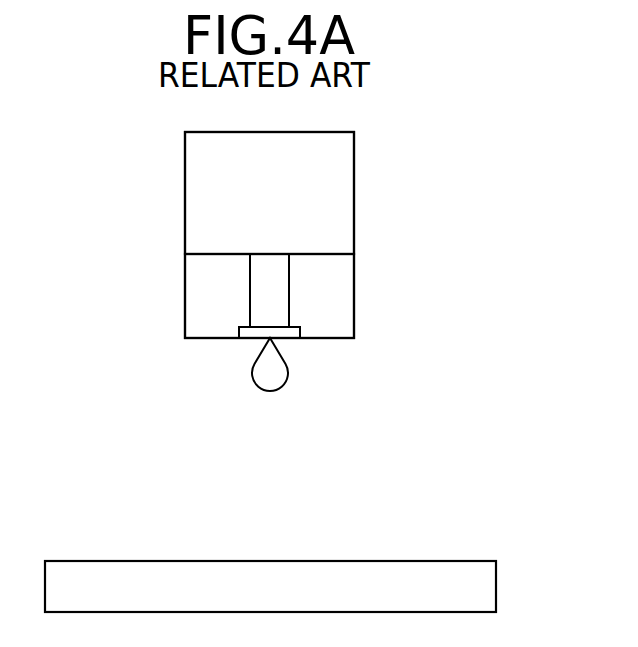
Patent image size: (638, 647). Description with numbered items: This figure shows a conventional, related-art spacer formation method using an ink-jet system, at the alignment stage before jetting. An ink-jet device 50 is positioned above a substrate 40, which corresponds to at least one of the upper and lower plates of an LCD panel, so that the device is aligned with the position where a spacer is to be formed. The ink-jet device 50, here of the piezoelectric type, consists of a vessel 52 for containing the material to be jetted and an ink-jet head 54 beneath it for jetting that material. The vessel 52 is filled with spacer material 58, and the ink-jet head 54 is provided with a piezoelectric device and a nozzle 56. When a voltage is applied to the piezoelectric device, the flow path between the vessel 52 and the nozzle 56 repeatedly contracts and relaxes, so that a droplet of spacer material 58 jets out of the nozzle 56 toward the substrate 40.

The substrate 40 is at (490, 583).
The ink-jet device 50 is at (165, 212).
The vessel 52 is at (345, 193).
The ink-jet head 54 is at (345, 295).
The nozzle 56 is at (256, 315).
The spacer material 58 is at (283, 366).